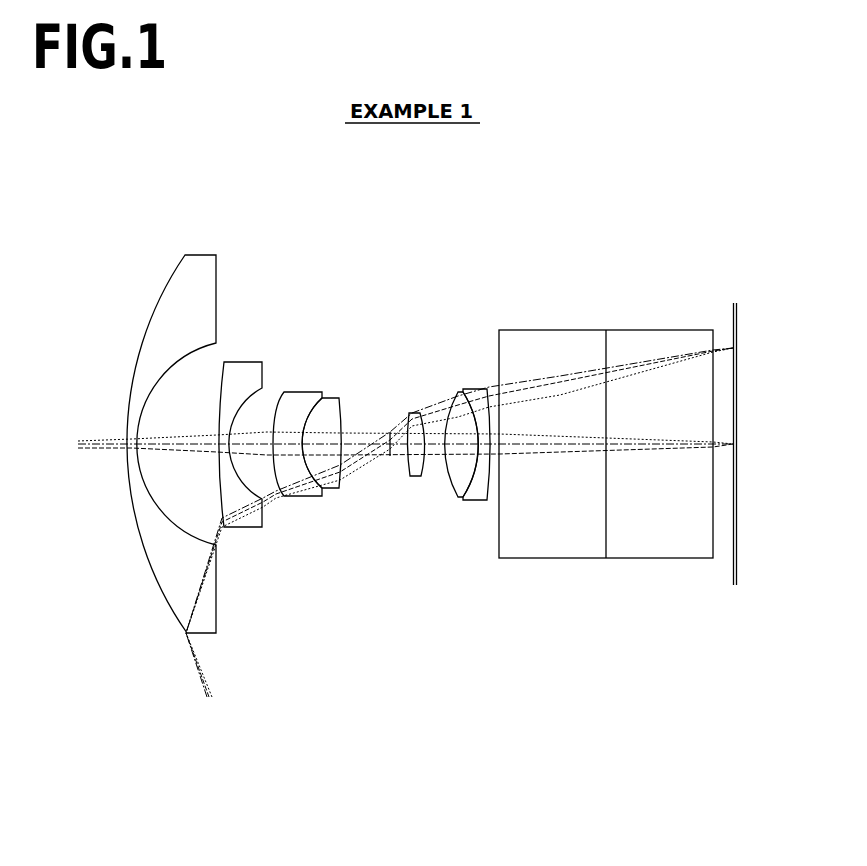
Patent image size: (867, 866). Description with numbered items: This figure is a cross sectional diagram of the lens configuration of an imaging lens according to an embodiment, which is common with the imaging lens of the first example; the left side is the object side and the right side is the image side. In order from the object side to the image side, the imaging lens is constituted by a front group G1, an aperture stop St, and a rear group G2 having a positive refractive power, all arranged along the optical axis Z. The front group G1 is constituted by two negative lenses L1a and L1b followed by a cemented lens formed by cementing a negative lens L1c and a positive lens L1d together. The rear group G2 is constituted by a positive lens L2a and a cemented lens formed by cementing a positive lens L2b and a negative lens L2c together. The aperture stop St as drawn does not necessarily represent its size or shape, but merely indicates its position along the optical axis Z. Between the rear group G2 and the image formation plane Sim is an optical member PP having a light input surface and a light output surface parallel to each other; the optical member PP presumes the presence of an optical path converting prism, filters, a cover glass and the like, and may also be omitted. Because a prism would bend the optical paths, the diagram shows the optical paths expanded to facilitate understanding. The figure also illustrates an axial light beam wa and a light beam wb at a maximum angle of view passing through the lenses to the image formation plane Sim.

The front group G1 is at (338, 179).
The rear group G2 is at (510, 180).
The negative lens L1a is at (200, 258).
The negative lens L1b is at (247, 364).
The negative lens L1c is at (302, 392).
The positive lens L1d is at (332, 398).
The positive lens L2a is at (416, 412).
The positive lens L2b is at (462, 392).
The negative lens L2c is at (477, 390).
The aperture stop St is at (390, 456).
The optical member PP is at (737, 315).
The image formation plane Sim is at (735, 572).
The optical axis Z is at (98, 440).
The axial light beam wa is at (72, 420).
The light beam at a maximum angle of view wb is at (232, 698).